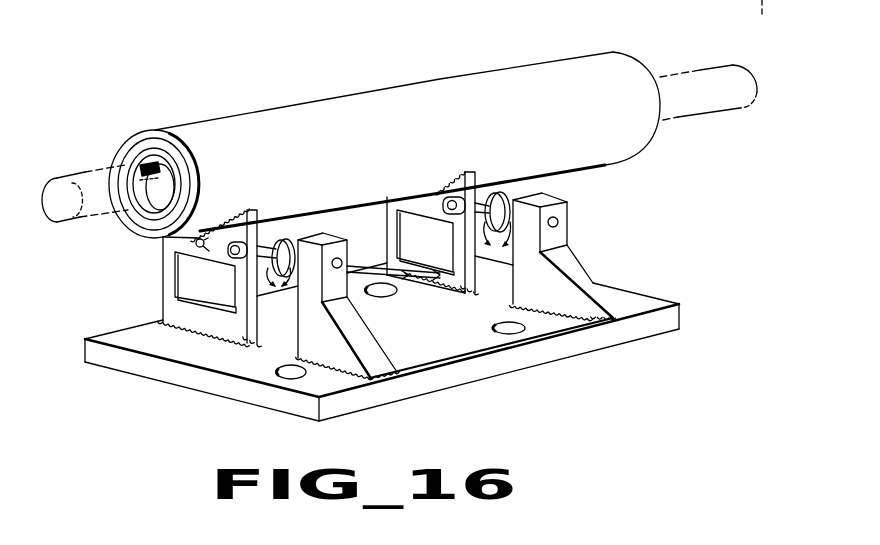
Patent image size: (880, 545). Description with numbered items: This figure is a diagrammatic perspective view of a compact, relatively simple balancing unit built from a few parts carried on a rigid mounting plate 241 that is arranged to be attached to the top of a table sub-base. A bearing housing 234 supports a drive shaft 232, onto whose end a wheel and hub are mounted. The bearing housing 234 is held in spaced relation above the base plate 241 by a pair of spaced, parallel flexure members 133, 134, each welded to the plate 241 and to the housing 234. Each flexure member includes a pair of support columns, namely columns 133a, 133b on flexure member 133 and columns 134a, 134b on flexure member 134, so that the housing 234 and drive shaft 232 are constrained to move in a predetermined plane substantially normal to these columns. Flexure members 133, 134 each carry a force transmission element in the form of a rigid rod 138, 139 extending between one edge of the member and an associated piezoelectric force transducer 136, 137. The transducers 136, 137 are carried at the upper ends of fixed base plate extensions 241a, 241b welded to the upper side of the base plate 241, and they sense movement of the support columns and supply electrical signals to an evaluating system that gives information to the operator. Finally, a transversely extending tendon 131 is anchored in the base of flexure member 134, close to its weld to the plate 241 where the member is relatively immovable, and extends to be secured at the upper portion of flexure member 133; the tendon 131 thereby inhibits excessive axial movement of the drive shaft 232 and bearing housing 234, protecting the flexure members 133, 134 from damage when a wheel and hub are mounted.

The bearing housing 234 is at (423, 98).
The drive shaft 232 is at (733, 63).
The mounting plate 241 is at (448, 349).
The base plate extension 241a is at (340, 350).
The base plate extension 241b is at (567, 268).
The flexure member 133 is at (185, 315).
The support column 133a is at (242, 305).
The support column 133b is at (168, 273).
The rigid rod 138 is at (258, 210).
The piezoelectric force transducer 136 is at (278, 256).
The flexure member 134 is at (457, 288).
The support column 134a is at (460, 242).
The support column 134b is at (393, 223).
The rigid rod 139 is at (482, 202).
The piezoelectric force transducer 137 is at (503, 198).
The tendon 131 is at (410, 274).